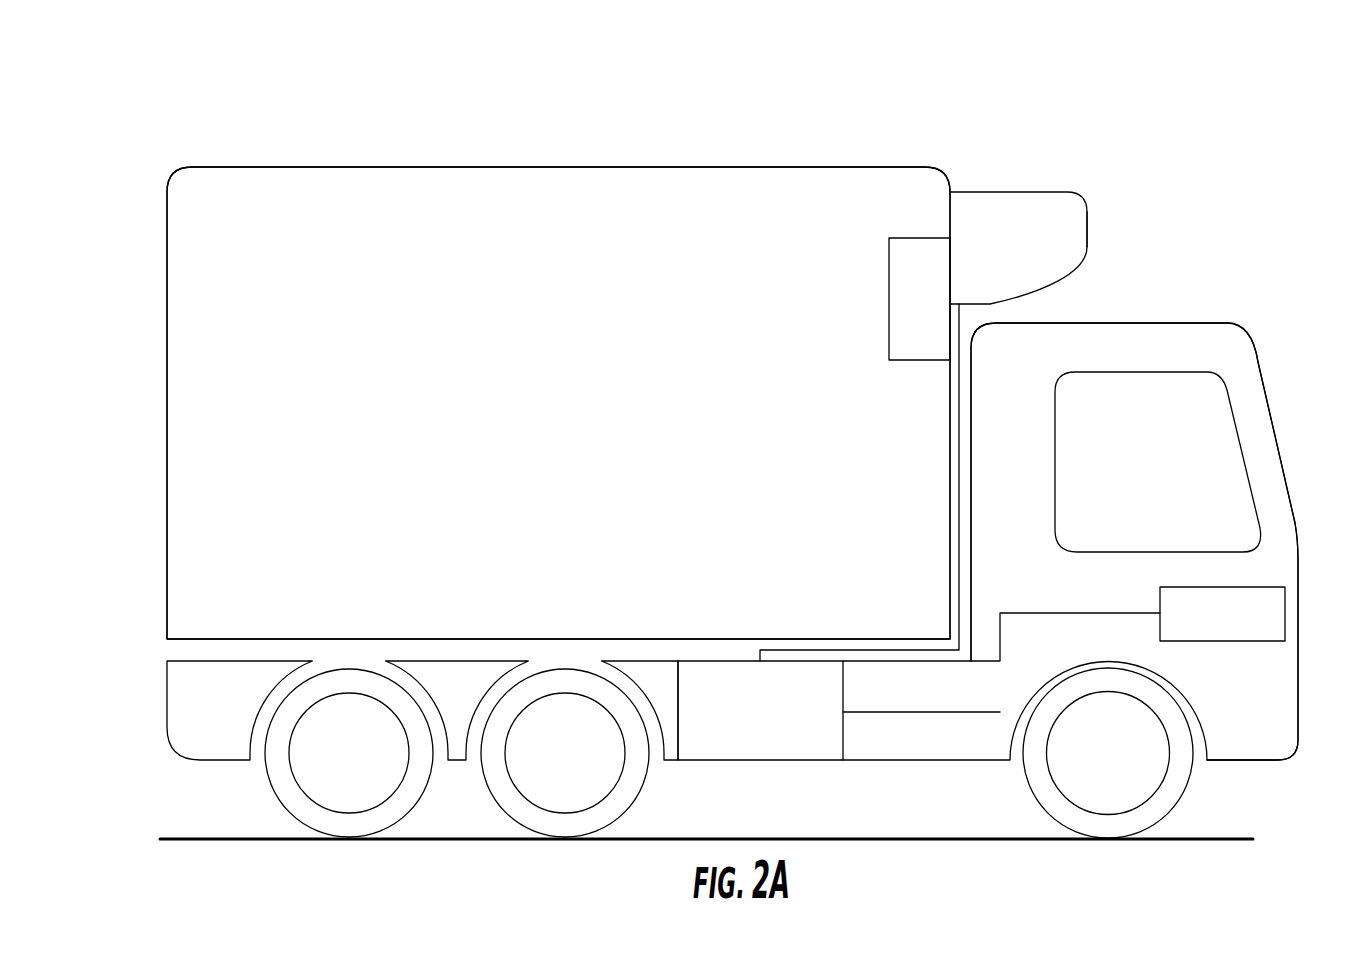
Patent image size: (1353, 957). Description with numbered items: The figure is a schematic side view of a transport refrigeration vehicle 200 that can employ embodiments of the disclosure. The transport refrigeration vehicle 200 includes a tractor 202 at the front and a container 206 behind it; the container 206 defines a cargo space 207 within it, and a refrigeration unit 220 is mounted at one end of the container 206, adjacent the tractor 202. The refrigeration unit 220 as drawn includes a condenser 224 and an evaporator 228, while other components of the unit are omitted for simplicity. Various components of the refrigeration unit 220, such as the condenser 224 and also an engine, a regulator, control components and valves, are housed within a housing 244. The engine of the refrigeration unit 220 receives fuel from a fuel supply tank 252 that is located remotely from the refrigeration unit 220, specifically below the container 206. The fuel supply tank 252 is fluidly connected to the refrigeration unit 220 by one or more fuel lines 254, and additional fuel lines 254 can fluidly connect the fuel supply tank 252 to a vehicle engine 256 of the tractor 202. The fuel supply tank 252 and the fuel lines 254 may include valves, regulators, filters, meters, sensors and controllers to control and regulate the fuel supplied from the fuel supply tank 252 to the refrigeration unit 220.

The transport refrigeration vehicle 200 is at (504, 92).
The tractor 202 is at (1245, 377).
The container 206 is at (347, 167).
The cargo space 207 is at (213, 210).
The refrigeration unit 220 is at (964, 155).
The condenser 224 is at (1020, 203).
The evaporator 228 is at (907, 302).
The housing 244 is at (1087, 228).
The fuel supply tank 252 is at (762, 740).
The fuel lines 254 is at (1062, 613).
The vehicle engine 256 is at (1262, 612).